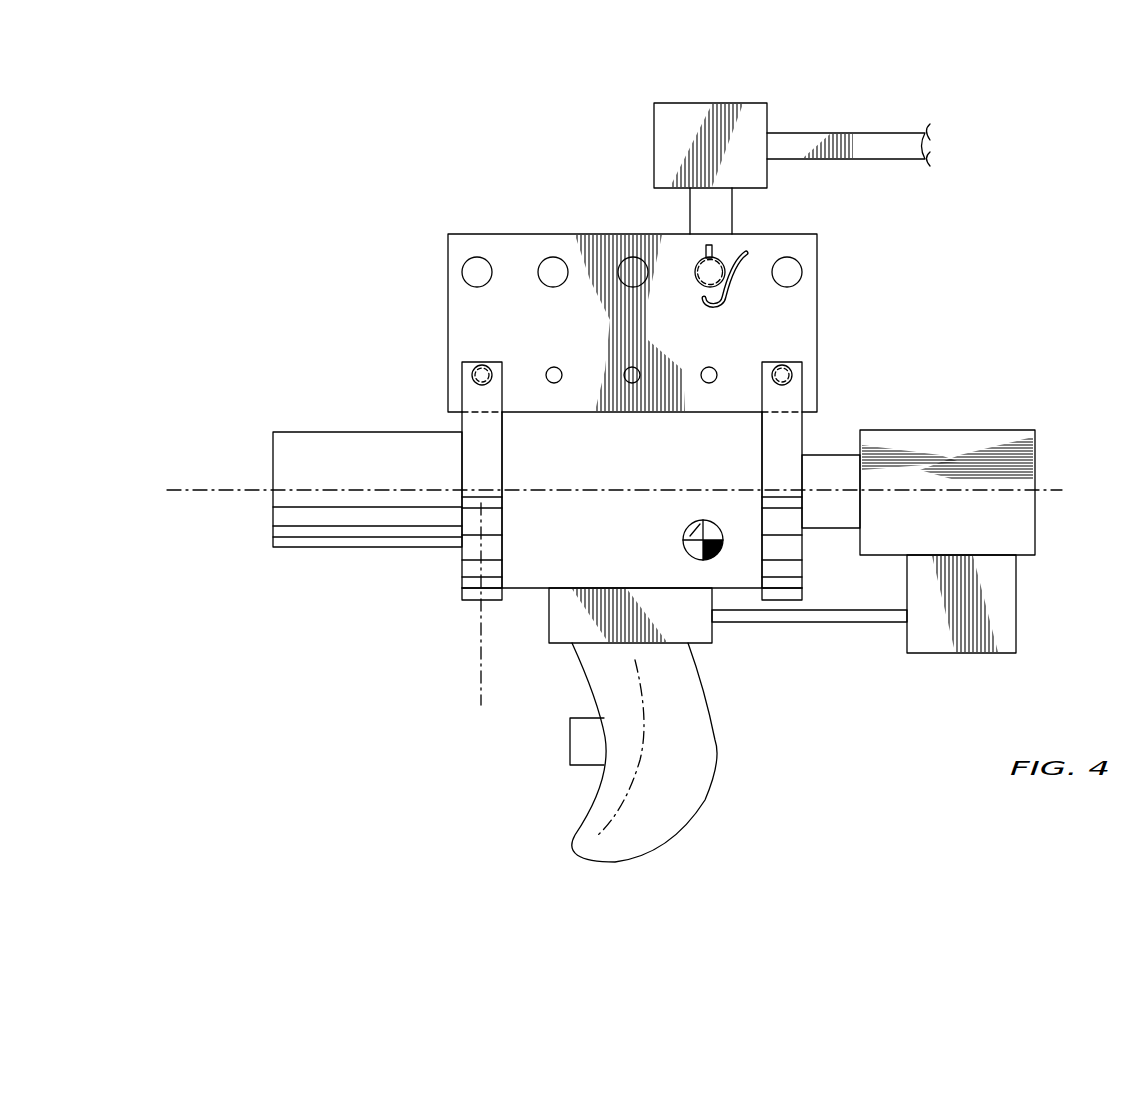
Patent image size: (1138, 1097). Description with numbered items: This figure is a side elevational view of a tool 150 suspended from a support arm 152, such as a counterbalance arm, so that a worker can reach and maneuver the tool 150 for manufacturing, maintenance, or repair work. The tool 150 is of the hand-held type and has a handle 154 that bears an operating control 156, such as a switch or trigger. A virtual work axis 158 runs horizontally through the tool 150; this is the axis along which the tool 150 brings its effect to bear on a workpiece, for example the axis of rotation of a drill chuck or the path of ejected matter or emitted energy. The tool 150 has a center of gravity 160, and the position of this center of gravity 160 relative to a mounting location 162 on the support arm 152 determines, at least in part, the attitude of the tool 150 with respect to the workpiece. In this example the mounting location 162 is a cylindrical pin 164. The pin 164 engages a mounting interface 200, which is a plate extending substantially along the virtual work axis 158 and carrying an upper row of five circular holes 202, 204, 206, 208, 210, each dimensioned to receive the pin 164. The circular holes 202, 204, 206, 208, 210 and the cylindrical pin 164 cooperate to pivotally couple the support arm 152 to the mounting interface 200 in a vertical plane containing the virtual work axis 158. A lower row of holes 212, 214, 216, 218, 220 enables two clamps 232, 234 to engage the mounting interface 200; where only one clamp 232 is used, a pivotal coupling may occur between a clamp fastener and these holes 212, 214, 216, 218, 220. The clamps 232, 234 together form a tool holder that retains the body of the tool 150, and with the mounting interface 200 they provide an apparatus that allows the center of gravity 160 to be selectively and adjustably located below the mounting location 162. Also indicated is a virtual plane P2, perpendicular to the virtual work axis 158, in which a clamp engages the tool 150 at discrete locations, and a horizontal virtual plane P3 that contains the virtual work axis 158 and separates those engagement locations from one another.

The tool 150 is at (433, 743).
The support arm 152 is at (870, 150).
The handle 154 is at (697, 767).
The operating control 156 is at (573, 733).
The virtual work axis 158 is at (213, 489).
The center of gravity 160 is at (689, 526).
The mounting location 162 is at (740, 247).
The cylindrical pin 164 is at (698, 283).
The mounting interface 200 is at (434, 293).
The hole 202 is at (477, 257).
The hole 204 is at (553, 257).
The hole 206 is at (633, 257).
The hole 208 is at (698, 262).
The hole 210 is at (802, 272).
The hole 212 is at (477, 370).
The hole 214 is at (554, 383).
The hole 216 is at (632, 383).
The hole 218 is at (709, 383).
The hole 220 is at (791, 380).
The clamp 232 is at (470, 598).
The clamp 234 is at (782, 590).
The virtual plane P2 is at (482, 662).
The virtual plane P3 is at (551, 492).